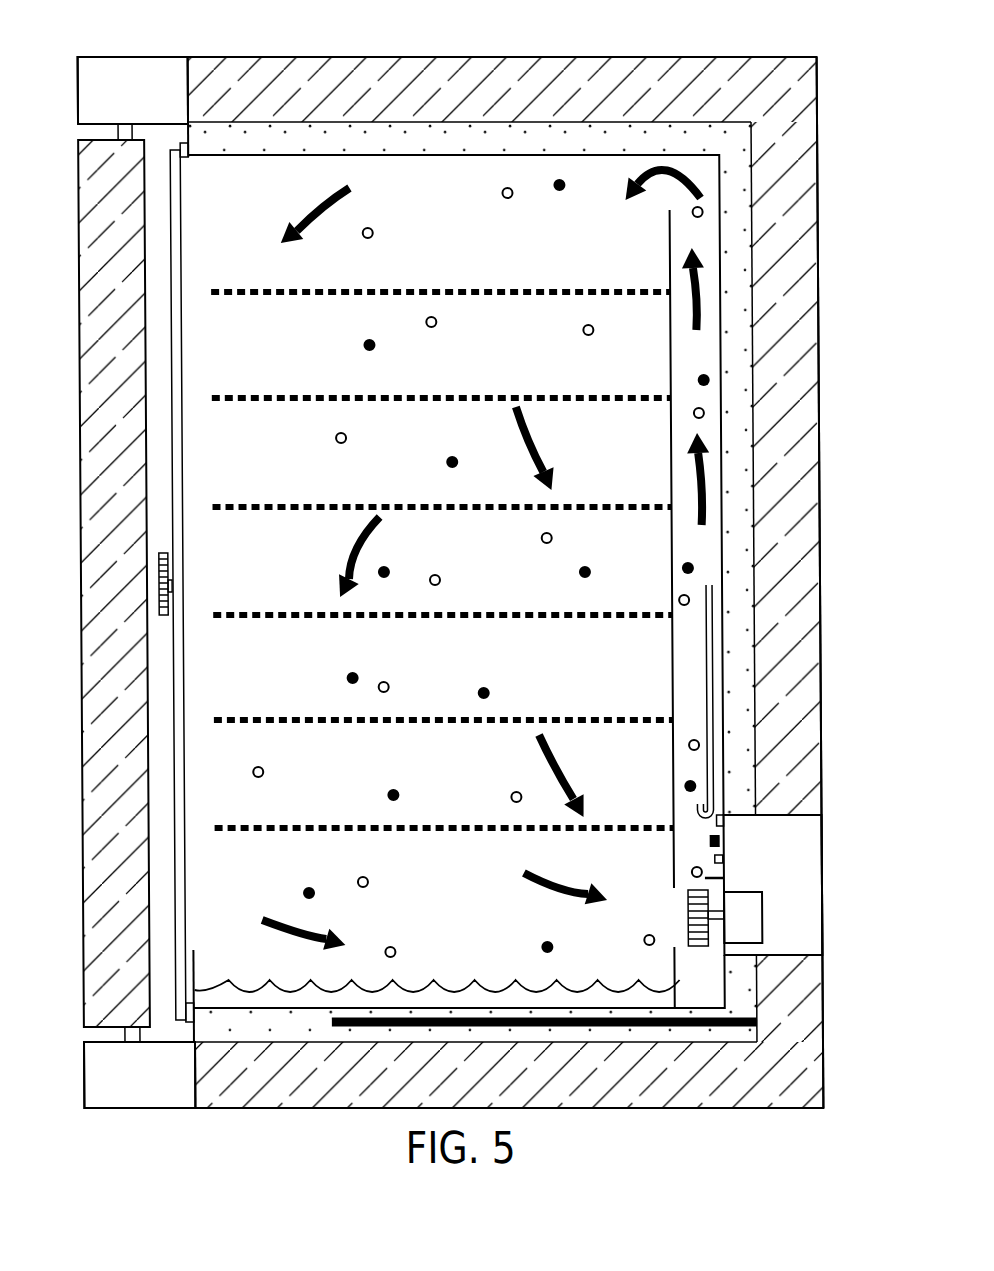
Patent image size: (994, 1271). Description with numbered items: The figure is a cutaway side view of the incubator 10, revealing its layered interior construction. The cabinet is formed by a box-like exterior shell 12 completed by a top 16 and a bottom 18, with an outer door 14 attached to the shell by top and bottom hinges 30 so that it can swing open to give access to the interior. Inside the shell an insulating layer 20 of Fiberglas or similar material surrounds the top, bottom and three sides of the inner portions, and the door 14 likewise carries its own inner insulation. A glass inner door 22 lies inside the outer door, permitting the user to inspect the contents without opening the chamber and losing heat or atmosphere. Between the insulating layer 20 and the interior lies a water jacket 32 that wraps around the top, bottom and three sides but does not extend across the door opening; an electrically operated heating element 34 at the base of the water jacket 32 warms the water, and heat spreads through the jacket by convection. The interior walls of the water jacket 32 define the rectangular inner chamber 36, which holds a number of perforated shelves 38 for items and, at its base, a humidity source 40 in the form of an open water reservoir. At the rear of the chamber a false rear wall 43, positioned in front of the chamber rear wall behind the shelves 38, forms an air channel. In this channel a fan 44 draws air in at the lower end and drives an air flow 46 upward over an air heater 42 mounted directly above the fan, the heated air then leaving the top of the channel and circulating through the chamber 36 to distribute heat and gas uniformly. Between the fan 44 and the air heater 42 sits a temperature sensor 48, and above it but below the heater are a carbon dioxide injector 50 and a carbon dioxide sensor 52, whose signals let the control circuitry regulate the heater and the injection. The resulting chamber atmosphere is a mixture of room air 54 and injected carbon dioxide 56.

The incubator 10 is at (677, 1153).
The exterior shell 12 is at (819, 135).
The door 14 is at (80, 460).
The top 16 is at (543, 57).
The bottom 18 is at (263, 1108).
The insulating layer 20 is at (800, 587).
The inner door 22 is at (187, 697).
The hinges 30 is at (135, 125).
The water jacket 32 is at (747, 480).
The heating element 34 is at (656, 1020).
The inner chamber 36 is at (440, 170).
The shelves 38 is at (216, 722).
The humidity source 40 is at (255, 993).
The air heater 42 is at (706, 662).
The false rear wall 43 is at (673, 382).
The fan 44 is at (688, 917).
The air flow 46 is at (710, 307).
The temperature sensor 48 is at (722, 878).
The CO2 injector 50 is at (712, 860).
The CO2 sensor 52 is at (722, 839).
The room air 54 is at (369, 347).
The CO2 56 is at (340, 442).